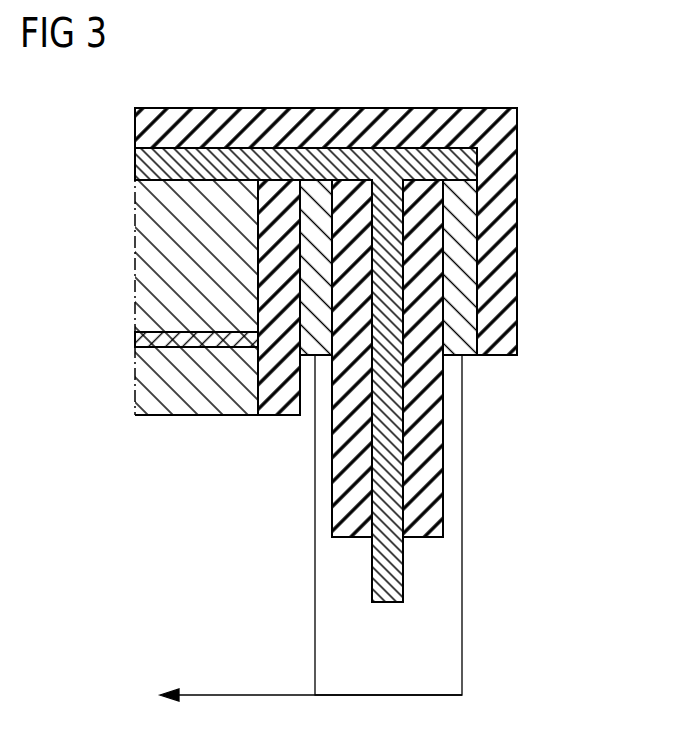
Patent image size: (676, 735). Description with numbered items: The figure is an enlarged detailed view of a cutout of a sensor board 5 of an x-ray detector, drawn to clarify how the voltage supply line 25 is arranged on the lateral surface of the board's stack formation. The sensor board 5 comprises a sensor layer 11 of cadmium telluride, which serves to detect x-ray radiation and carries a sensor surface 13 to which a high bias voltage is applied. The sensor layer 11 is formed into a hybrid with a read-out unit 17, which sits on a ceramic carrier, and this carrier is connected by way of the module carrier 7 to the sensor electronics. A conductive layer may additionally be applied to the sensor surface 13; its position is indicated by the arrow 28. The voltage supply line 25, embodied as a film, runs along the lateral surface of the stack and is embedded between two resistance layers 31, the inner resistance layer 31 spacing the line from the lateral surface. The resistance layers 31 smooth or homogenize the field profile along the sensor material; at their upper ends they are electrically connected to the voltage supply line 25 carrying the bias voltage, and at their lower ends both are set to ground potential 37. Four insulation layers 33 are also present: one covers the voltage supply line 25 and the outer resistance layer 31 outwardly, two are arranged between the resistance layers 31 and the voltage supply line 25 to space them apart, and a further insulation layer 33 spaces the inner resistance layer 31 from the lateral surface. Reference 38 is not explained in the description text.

The sensor board 5 is at (500, 95).
The module carrier 7 is at (145, 372).
The sensor layer 11 is at (145, 297).
The sensor surface 13 is at (242, 148).
The read-out unit 17 is at (145, 338).
The voltage supply line 25 is at (410, 160).
The arrow 28 is at (135, 148).
The resistance layer 31 is at (320, 303).
The insulation layer 33 is at (505, 331).
The ground potential 37 is at (232, 695).
The cooling structure 38 is at (555, 180).